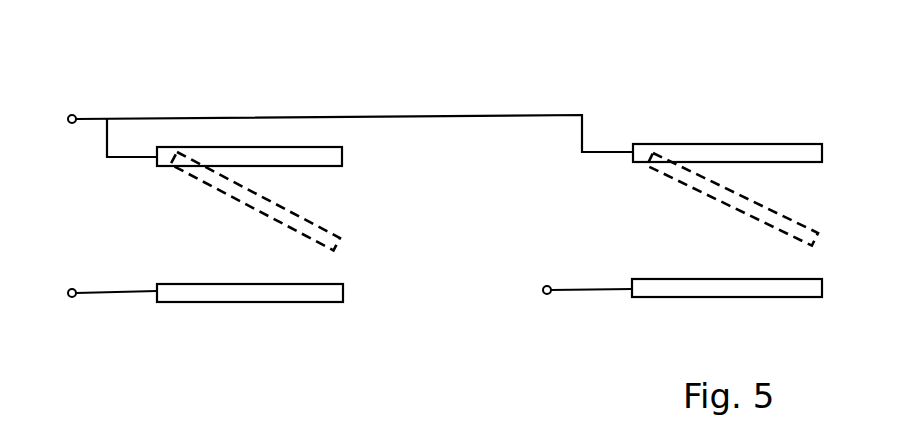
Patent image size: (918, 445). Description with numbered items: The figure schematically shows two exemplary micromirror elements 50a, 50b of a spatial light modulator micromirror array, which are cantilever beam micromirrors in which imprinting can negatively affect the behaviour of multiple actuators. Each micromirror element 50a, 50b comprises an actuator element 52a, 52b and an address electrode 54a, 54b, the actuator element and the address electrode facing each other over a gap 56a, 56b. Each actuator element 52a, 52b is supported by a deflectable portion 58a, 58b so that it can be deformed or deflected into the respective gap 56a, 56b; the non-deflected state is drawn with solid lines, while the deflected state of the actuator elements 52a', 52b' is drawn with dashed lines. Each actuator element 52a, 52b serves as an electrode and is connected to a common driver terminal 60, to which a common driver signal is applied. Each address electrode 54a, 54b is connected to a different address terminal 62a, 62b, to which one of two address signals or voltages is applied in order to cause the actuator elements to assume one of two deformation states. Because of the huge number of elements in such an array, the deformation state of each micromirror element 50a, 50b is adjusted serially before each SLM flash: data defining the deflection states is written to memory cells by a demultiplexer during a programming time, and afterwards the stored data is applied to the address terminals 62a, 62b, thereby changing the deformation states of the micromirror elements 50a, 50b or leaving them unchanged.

The micromirror element 50a is at (265, 144).
The micromirror element 50b is at (721, 147).
The actuator element 52a is at (285, 114).
The actuator element in deflected state 52a' is at (314, 201).
The actuator element 52b is at (766, 124).
The actuator element in deflected state 52b' is at (769, 199).
The address electrode 54a is at (322, 302).
The address electrode 54b is at (803, 297).
The gap 56a is at (339, 208).
The gap 56b is at (675, 240).
The deflectable portion 58a is at (195, 180).
The deflectable portion 58b is at (658, 173).
The driver terminal 60 is at (75, 116).
The address terminal 62a is at (75, 297).
The address terminal 62b is at (547, 295).